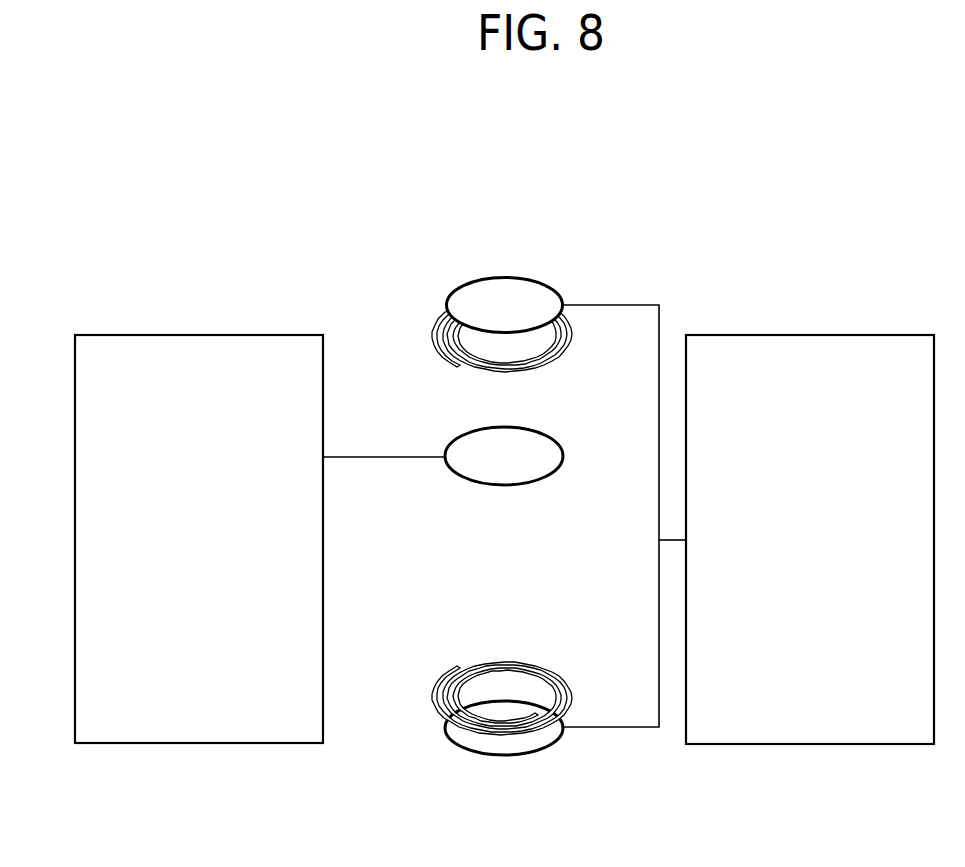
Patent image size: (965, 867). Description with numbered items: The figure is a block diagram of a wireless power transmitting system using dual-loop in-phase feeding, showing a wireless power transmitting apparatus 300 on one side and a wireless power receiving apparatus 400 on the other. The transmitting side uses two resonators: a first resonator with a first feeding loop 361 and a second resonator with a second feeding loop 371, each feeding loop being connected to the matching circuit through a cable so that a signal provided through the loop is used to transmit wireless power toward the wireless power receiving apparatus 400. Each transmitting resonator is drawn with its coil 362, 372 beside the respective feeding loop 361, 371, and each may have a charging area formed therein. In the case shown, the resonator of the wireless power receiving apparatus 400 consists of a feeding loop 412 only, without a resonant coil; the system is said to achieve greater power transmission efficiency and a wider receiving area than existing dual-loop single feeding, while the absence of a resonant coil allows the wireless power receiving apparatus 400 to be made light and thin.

The wireless power transmitting apparatus 300 is at (903, 335).
The wireless power receiving apparatus 400 is at (293, 335).
The first feeding loop 361 is at (505, 757).
The transmitting coil 362 is at (505, 657).
The second feeding loop 371 is at (502, 277).
The receiving coil 372 is at (447, 315).
The feeding loop 412 is at (555, 438).